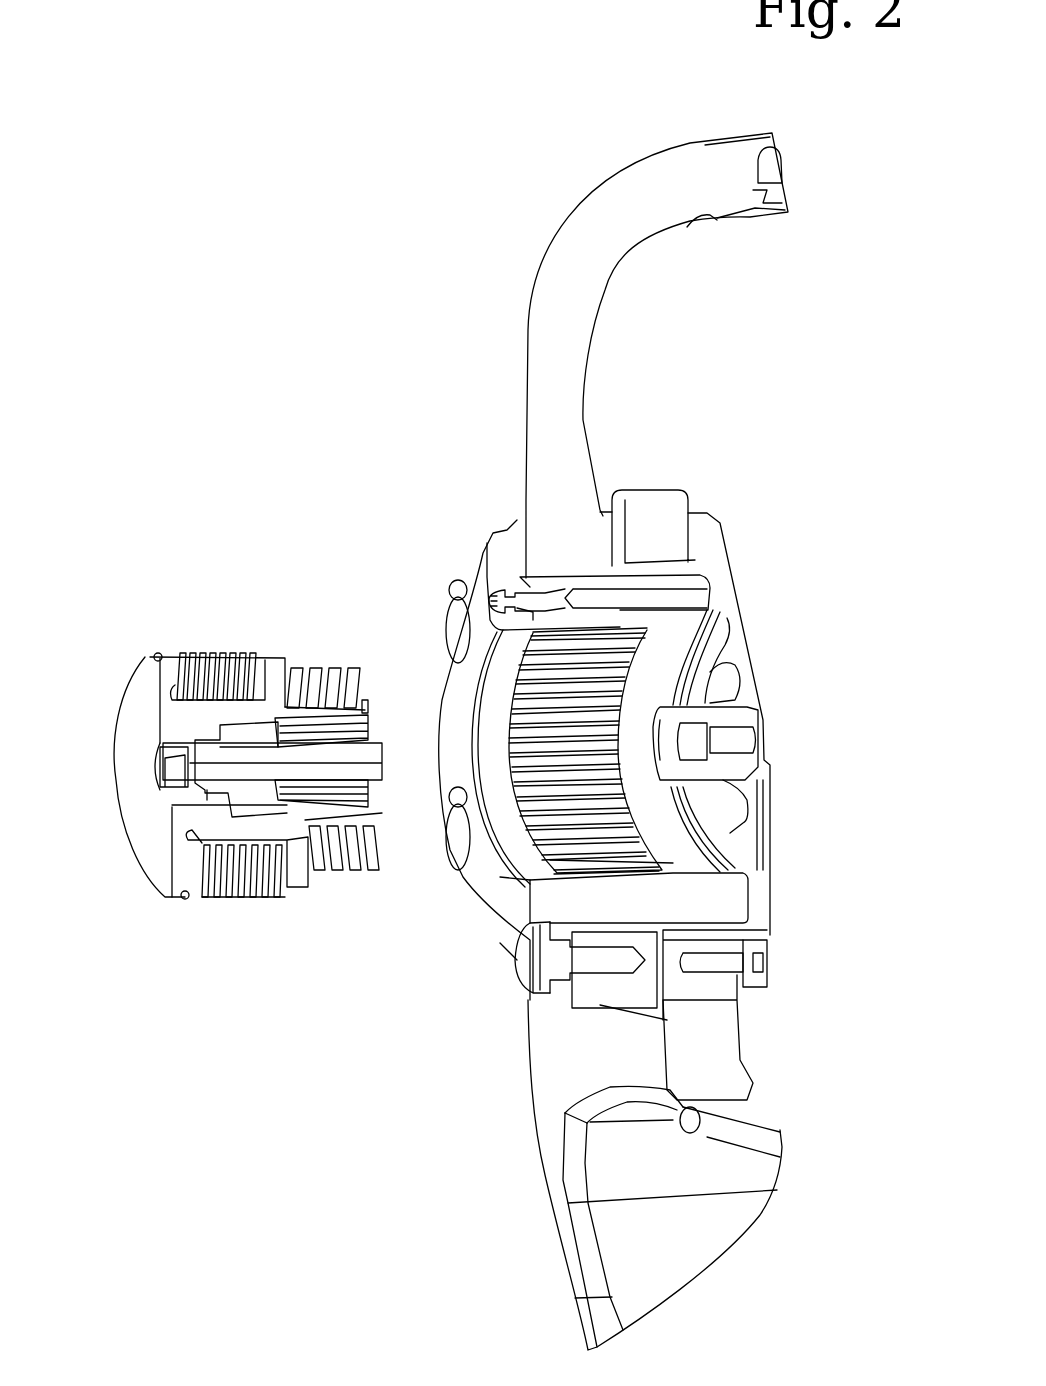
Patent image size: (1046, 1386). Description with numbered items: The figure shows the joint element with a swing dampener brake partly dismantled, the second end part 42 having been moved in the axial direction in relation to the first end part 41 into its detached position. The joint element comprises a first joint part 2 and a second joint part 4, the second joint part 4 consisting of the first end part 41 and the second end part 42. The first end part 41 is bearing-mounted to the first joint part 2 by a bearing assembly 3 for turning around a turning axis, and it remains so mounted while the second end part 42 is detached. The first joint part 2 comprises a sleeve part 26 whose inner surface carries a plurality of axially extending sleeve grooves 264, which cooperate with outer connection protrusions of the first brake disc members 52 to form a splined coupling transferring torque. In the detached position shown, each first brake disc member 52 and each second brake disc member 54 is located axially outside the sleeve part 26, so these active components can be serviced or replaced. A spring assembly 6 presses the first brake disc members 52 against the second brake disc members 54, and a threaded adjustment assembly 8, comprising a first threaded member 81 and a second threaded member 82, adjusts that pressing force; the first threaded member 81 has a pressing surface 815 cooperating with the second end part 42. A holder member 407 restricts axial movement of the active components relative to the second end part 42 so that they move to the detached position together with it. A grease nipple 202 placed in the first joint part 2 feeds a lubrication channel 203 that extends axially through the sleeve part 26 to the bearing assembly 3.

The first joint part 2 is at (524, 460).
The bearing assembly 3 is at (604, 508).
The second joint part 4 is at (650, 488).
The sleeve part 26 is at (712, 578).
The first end part 41 is at (757, 686).
The second end part 42 is at (116, 711).
The spring assembly 6 is at (362, 681).
The threaded adjustment assembly 8 is at (154, 757).
The first brake disc member 52 is at (247, 645).
The second brake disc member 54 is at (267, 695).
The first threaded member 81 is at (160, 778).
The second threaded member 82 is at (683, 727).
The grease nipple 202 is at (492, 597).
The lubrication channel 203 is at (702, 598).
The sleeve groove 264 is at (508, 735).
The holder member 407 is at (370, 702).
The pressing surface 815 is at (207, 792).